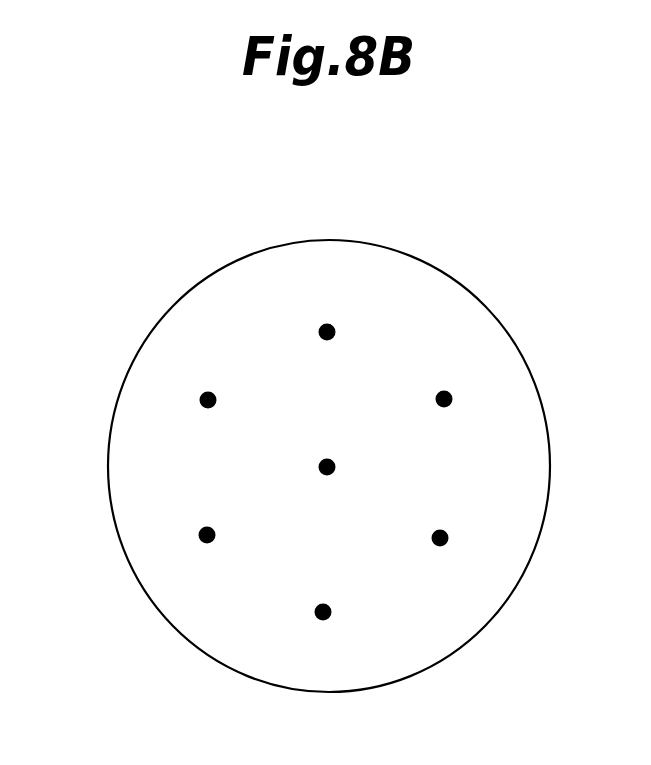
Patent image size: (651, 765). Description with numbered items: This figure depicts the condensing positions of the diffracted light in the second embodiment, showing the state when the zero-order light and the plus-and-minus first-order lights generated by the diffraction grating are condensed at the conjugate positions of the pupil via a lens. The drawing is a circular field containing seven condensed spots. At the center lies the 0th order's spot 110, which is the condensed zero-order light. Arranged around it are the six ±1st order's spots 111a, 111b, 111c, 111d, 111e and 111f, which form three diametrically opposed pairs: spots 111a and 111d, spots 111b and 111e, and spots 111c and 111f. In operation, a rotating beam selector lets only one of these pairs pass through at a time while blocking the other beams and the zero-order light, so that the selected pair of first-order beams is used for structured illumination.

The 0th order's spot 110 is at (335, 468).
The ±1st order's spot 111a is at (327, 330).
The ±1st order's spot 111b is at (452, 397).
The ±1st order's spot 111c is at (448, 538).
The ±1st order's spot 111d is at (331, 614).
The ±1st order's spot 111e is at (207, 543).
The ±1st order's spot 111f is at (207, 392).